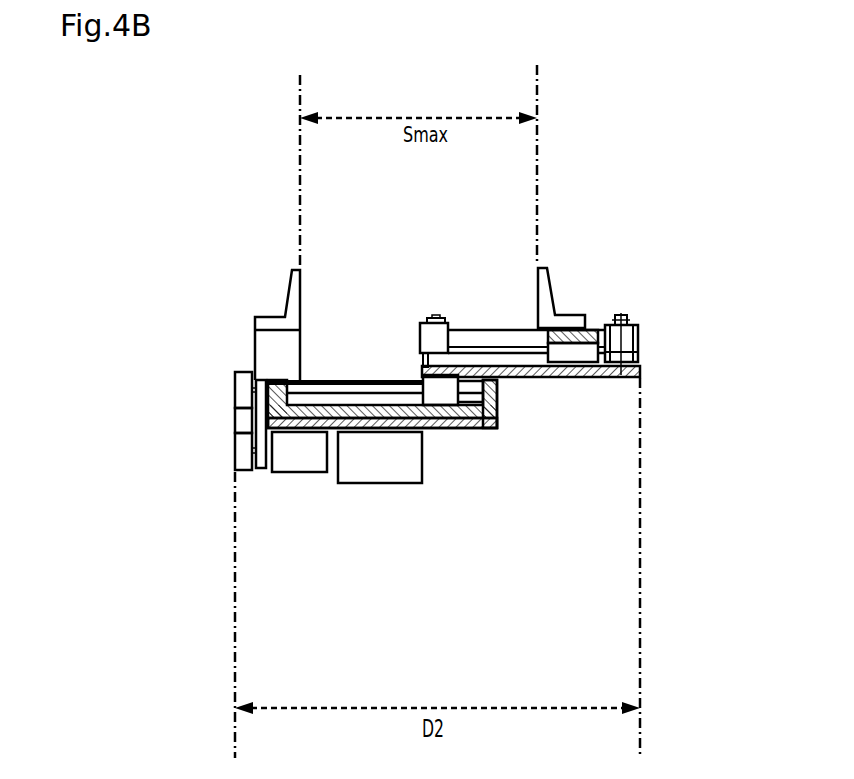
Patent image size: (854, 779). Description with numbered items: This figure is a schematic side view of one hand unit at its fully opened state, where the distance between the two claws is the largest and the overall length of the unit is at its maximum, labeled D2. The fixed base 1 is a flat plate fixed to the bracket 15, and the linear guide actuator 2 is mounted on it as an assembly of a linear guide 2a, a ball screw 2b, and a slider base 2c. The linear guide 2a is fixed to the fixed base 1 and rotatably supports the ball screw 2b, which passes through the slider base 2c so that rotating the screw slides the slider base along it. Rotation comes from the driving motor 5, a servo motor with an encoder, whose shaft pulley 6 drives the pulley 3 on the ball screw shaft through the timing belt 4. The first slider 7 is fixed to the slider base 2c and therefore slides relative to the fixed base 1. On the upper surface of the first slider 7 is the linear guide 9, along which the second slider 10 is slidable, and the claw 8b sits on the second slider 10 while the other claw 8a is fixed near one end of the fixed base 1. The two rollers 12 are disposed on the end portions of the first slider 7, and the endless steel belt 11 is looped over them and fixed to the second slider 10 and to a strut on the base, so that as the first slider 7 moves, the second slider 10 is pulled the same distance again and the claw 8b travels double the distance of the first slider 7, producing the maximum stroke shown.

The fixed base 1 is at (428, 428).
The linear guide actuator 2 is at (512, 411).
The linear guide 2a is at (478, 428).
The ball screw 2b is at (505, 420).
The slider base 2c is at (422, 378).
The pulley 3 is at (235, 400).
The timing belt 4 is at (235, 433).
The driving motor 5 is at (284, 462).
The pulley 6 is at (235, 463).
The first slider 7 is at (645, 368).
The claw 8a is at (292, 303).
The claw 8b is at (550, 290).
The linear guide 9 is at (535, 360).
The second slider 10 is at (600, 330).
The steel belt 11 is at (440, 345).
The rollers 12 is at (637, 325).
The bracket 15 is at (397, 480).